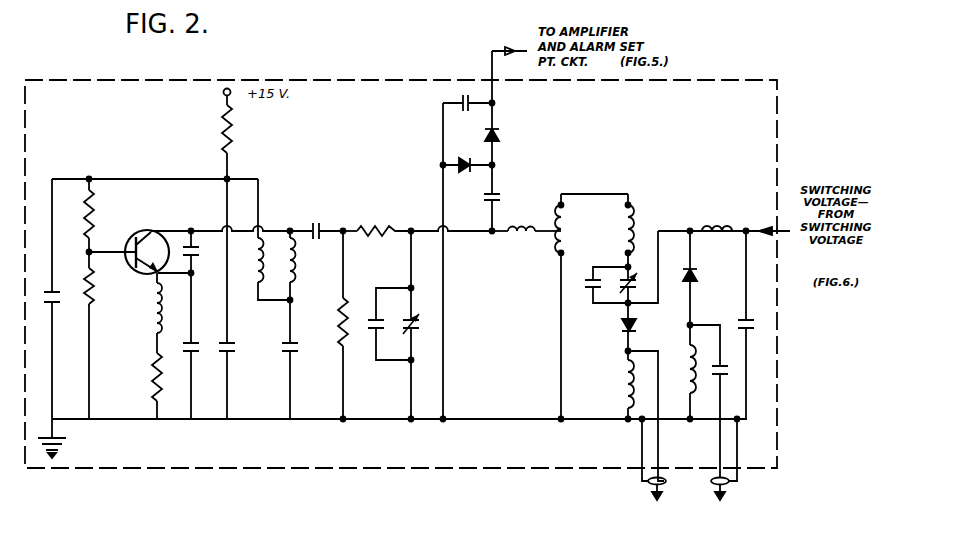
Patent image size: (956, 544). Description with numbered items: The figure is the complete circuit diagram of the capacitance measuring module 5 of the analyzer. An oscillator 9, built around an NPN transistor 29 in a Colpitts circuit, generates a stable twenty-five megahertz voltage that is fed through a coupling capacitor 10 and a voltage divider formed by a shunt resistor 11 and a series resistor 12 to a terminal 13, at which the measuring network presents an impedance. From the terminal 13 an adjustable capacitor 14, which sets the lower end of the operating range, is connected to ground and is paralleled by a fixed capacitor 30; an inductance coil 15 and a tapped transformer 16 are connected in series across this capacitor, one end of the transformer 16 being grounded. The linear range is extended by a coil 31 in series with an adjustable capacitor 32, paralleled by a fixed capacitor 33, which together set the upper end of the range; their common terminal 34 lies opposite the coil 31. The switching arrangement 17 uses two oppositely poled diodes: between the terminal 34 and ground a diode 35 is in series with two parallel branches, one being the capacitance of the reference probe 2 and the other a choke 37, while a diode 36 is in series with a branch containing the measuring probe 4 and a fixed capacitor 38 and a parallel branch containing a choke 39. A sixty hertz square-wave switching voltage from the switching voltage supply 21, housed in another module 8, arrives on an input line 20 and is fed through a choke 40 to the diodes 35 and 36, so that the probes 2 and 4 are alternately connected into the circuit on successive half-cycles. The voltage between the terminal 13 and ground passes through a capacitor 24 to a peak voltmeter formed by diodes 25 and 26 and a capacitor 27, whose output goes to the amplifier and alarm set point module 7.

The reference probe 2 is at (654, 541).
The measuring probe 4 is at (722, 541).
The capacitance measuring module 5 is at (385, 79).
The amplifier and alarm set point module 7 is at (613, 68).
The module 8 is at (871, 274).
The oscillator 9 is at (177, 216).
The coupling capacitor 10 is at (316, 222).
The shunt resistor 11 is at (340, 324).
The series resistor 12 is at (377, 226).
The terminal 13 is at (411, 226).
The adjustable capacitor 14 is at (415, 328).
The inductance coil 15 is at (522, 236).
The tapped transformer 16 is at (568, 223).
The switching arrangement 17 is at (676, 325).
The switching voltage input line 20 is at (757, 228).
The switching voltage supply 21 is at (835, 254).
The capacitor 24 is at (500, 196).
The diode 25 is at (502, 136).
The diode 26 is at (464, 146).
The capacitor 27 is at (462, 108).
The NPN transistor 29 is at (137, 231).
The fixed capacitor 30 is at (375, 335).
The coil 31 is at (636, 216).
The adjustable capacitor 32 is at (641, 268).
The fixed capacitor 33 is at (596, 300).
The common terminal 34 is at (625, 310).
The diode 35 is at (636, 329).
The diode 36 is at (699, 276).
The choke 37 is at (621, 389).
The fixed capacitor 38 is at (725, 367).
The choke 39 is at (696, 384).
The choke 40 is at (719, 228).